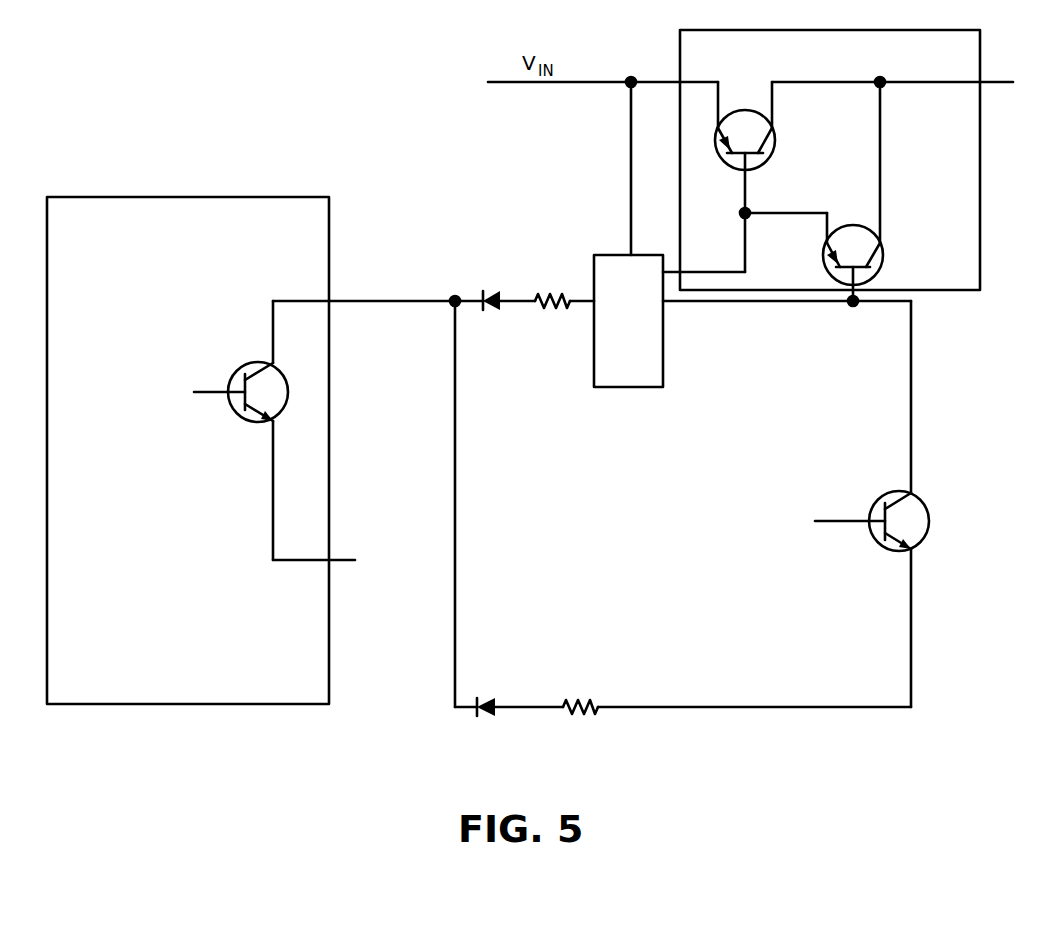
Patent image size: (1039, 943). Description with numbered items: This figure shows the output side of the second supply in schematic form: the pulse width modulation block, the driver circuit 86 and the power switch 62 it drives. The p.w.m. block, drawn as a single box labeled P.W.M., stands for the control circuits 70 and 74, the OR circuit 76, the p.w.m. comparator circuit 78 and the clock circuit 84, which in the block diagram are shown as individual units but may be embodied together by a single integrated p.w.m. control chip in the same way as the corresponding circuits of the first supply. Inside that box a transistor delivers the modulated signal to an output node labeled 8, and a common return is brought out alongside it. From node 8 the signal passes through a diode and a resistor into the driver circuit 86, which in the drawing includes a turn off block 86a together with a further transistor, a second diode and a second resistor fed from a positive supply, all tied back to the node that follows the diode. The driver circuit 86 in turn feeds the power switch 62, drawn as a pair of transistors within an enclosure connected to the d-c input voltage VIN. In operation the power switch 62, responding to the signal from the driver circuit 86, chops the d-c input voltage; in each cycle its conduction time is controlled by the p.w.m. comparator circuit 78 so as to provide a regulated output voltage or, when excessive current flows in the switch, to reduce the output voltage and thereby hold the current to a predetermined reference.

The output node of PWM circuit 8 is at (378, 289).
The power switch 62 is at (827, 31).
The circuit 70 is at (225, 430).
The circuit 74 is at (225, 430).
The OR circuit 76 is at (225, 430).
The p.w.m. comparator circuit 78 is at (225, 430).
The clock circuit 84 is at (186, 197).
The driver circuit 86 is at (710, 485).
The turn off block 86a is at (594, 387).